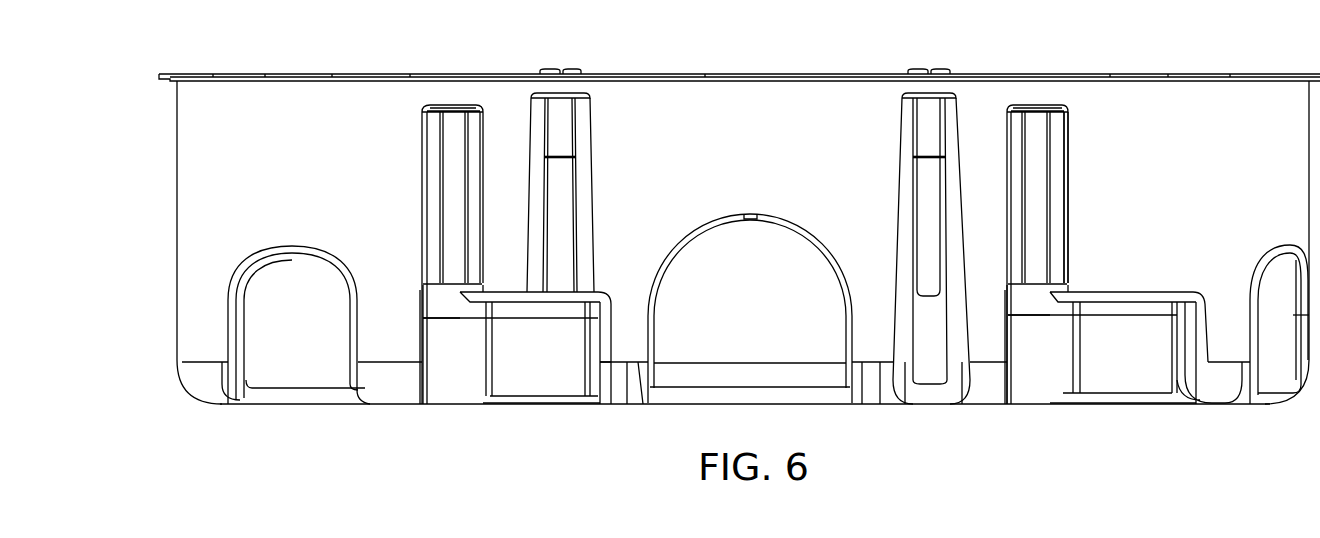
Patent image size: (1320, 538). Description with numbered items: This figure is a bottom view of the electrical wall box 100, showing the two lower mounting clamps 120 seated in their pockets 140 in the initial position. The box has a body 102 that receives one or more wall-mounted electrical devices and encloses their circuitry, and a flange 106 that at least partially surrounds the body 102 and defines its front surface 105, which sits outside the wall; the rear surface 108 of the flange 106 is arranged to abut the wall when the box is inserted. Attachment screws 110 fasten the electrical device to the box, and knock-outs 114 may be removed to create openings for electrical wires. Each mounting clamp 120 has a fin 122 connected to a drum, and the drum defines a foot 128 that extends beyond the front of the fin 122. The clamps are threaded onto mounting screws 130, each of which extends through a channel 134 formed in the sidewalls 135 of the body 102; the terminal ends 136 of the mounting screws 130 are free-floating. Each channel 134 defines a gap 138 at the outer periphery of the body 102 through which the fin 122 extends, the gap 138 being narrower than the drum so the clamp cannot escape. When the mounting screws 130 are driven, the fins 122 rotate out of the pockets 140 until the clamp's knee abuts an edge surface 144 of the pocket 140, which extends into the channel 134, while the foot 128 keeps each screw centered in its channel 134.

The electrical wall box 100 is at (262, 444).
The body 102 is at (726, 126).
The front surface 105 is at (1238, 74).
The flange 106 is at (203, 74).
The rear surface 108 is at (235, 82).
The attachment screws 110 is at (570, 69).
The knock-outs 114 is at (287, 340).
The mounting clamps 120 is at (500, 412).
The fin 122 is at (553, 372).
The foot 128 is at (447, 283).
The mounting screws 130 is at (455, 160).
The channel 134 is at (431, 130).
The sidewalls 135 is at (830, 169).
The terminal ends 136 is at (1065, 183).
The gap 138 is at (430, 200).
The pockets 140 is at (597, 377).
The edge surface 144 is at (420, 337).